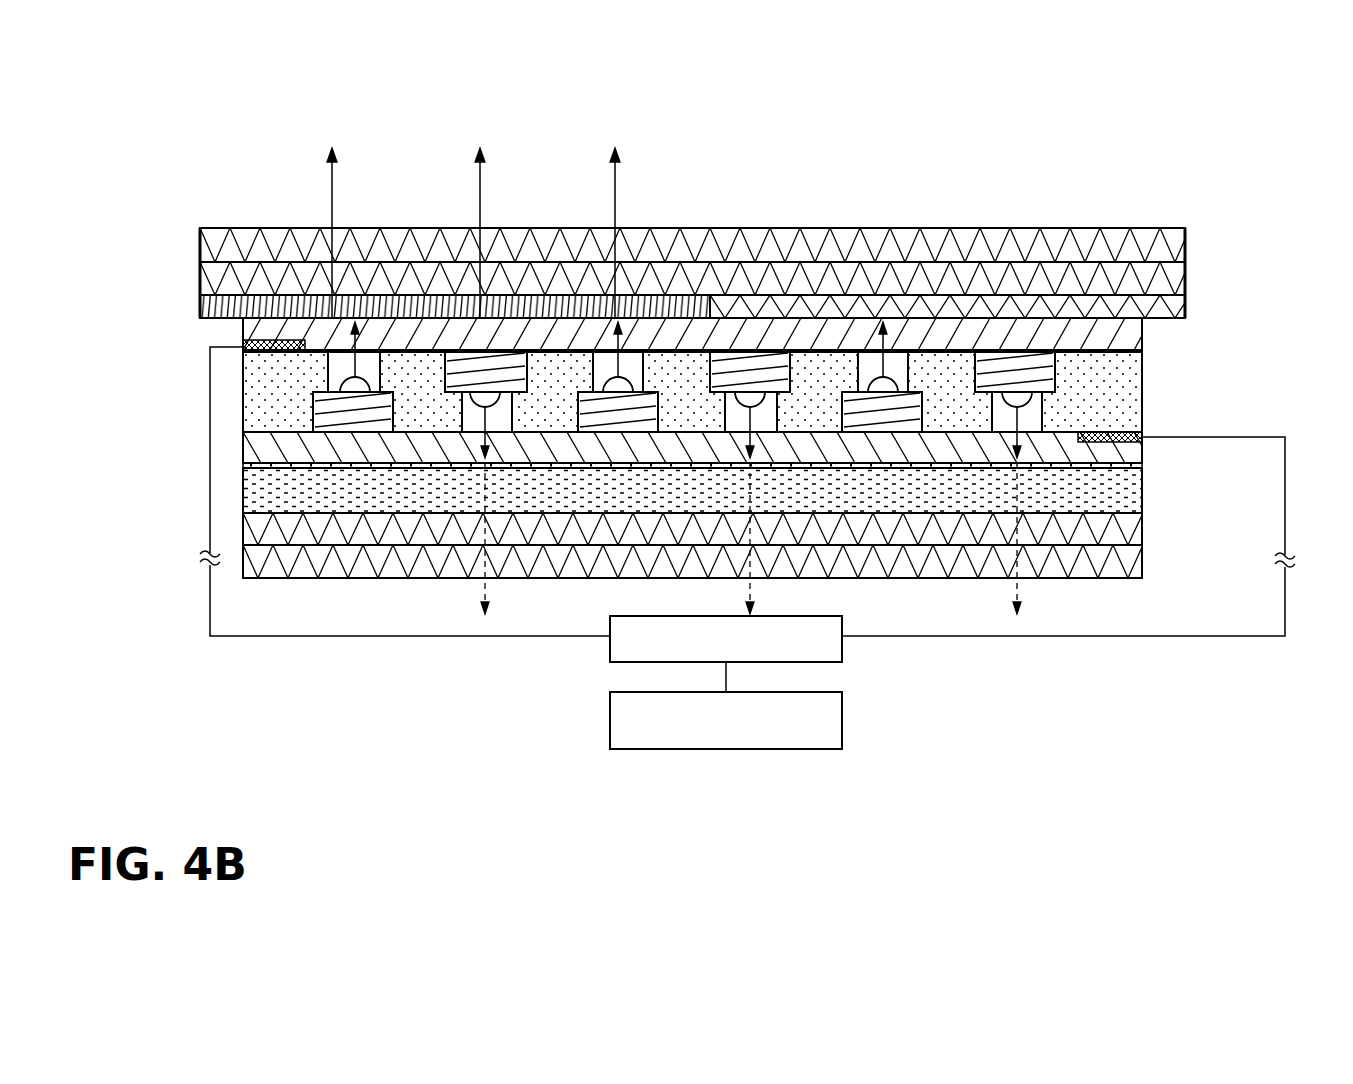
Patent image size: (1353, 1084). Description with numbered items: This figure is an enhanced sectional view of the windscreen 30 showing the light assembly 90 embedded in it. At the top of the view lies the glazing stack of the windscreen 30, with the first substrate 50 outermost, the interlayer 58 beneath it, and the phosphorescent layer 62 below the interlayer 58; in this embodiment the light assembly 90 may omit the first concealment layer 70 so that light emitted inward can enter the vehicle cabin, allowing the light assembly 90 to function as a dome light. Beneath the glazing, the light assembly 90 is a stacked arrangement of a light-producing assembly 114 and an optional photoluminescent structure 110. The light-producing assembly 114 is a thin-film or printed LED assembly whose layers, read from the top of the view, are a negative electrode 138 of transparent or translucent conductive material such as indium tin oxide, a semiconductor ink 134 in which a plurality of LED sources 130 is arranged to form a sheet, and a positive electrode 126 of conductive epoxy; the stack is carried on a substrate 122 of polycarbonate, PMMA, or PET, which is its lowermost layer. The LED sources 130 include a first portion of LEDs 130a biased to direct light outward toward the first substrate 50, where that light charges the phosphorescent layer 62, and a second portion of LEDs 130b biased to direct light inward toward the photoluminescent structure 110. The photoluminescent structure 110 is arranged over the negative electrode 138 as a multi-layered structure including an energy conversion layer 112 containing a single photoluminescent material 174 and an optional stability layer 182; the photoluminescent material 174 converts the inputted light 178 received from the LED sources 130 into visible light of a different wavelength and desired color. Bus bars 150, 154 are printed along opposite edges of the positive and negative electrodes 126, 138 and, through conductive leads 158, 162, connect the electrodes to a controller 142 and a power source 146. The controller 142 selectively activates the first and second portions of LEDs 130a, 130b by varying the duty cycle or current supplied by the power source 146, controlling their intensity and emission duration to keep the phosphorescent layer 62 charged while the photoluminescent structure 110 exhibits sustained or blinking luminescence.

The windscreen 30 is at (1182, 156).
The first substrate 50 is at (215, 245).
The interlayer 58 is at (215, 278).
The phosphorescent layer 62 is at (215, 305).
The first concealment layer 70 is at (1188, 298).
The light assembly 90 is at (1300, 320).
The negative electrode 138 is at (1143, 338).
The semiconductor ink 134 is at (1118, 387).
The bus bar 154 is at (257, 338).
The bus bar 150 is at (1128, 440).
The light-producing assembly 114 is at (205, 325).
The inputted light 178 is at (352, 358).
The LED sources 130 is at (312, 444).
The first portion of LEDs 130a is at (355, 413).
The second portion of LEDs 130b is at (515, 382).
The positive electrode 126 is at (1143, 456).
The photoluminescent material 174 is at (1143, 482).
The energy conversion layer 112 is at (1143, 497).
The photoluminescent structure 110 is at (1222, 462).
The stability layer 182 is at (1142, 532).
The substrate 122 is at (1143, 562).
The conductive lead 162 is at (207, 528).
The conductive lead 158 is at (1250, 637).
The controller 142 is at (842, 660).
The power source 146 is at (842, 715).